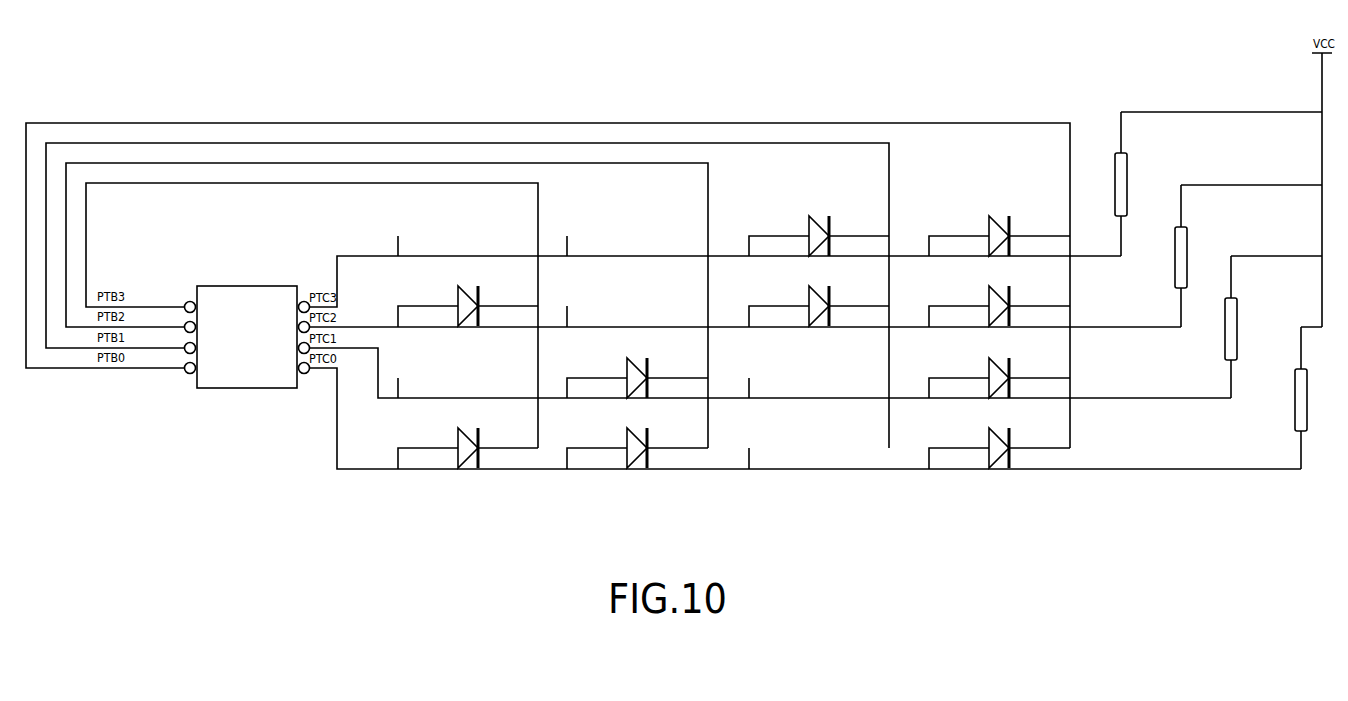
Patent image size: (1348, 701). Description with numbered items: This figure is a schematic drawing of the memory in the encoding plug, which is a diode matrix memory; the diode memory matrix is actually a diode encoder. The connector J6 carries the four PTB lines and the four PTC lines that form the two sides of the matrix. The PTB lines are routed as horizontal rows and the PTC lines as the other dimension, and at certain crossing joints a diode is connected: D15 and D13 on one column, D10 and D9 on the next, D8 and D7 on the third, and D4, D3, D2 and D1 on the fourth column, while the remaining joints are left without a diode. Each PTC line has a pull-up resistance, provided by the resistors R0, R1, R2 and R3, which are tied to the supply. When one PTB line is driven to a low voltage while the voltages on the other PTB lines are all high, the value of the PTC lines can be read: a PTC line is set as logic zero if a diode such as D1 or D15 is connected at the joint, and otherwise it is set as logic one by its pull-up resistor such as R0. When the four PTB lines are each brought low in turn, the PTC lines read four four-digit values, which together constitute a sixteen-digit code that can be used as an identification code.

The connector J6 is at (247, 328).
The diode D1 is at (999, 441).
The diode D2 is at (999, 369).
The diode D3 is at (999, 299).
The diode D4 is at (999, 228).
The diode D7 is at (819, 299).
The diode D8 is at (819, 228).
The diode D9 is at (637, 441).
The diode D10 is at (637, 370).
The diode D13 is at (468, 441).
The diode D15 is at (468, 298).
The pull-up resistor R0 10K R0 is at (1131, 184).
The pull-up resistor R1 10K R1 is at (1191, 256).
The pull-up resistor R2 10K R2 is at (1241, 327).
The pull-up resistor R3 10K R3 is at (1311, 398).